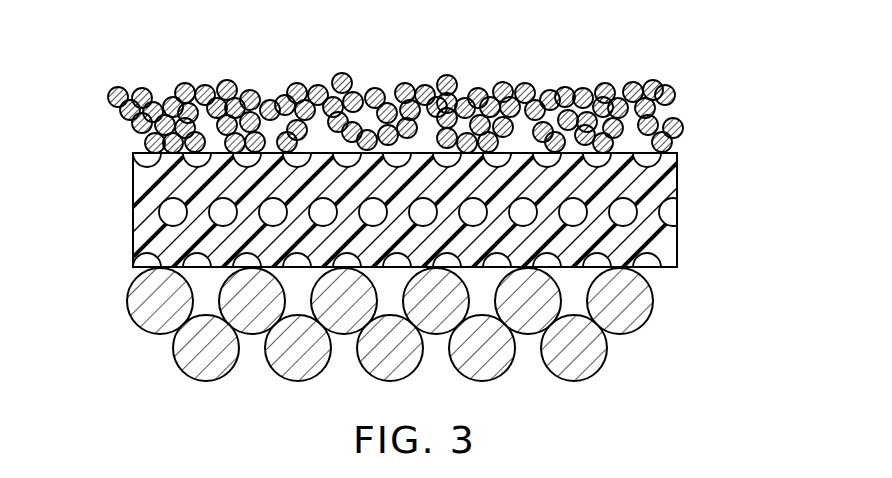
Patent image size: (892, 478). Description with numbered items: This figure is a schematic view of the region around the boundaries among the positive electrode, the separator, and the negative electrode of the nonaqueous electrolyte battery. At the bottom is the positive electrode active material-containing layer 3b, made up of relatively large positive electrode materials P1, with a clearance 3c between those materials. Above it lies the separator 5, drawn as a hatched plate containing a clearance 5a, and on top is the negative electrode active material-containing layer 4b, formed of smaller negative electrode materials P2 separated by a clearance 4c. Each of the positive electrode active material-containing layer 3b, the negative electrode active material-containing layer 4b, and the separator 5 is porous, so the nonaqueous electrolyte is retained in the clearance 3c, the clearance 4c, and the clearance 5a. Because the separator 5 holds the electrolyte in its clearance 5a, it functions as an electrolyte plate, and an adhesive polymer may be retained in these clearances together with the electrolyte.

The positive electrode active material-containing layer 3b is at (401, 352).
The clearance 3c is at (198, 292).
The negative electrode active material-containing layer 4b is at (410, 94).
The clearance 4c is at (205, 128).
The separator 5 is at (446, 200).
The clearance 5a is at (658, 205).
The positive electrode material P1 is at (206, 382).
The negative electrode material P2 is at (142, 89).